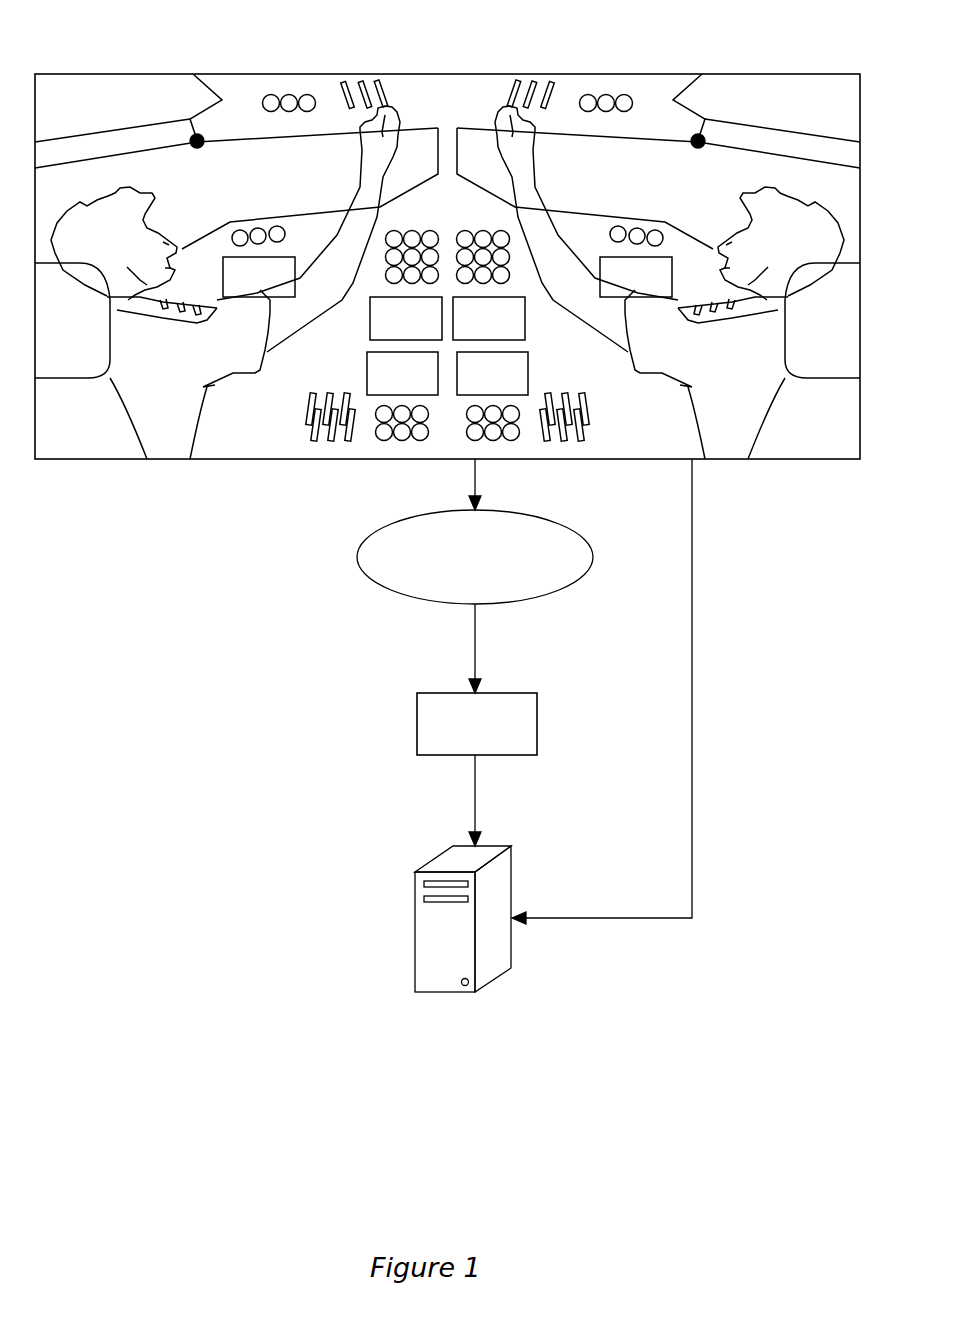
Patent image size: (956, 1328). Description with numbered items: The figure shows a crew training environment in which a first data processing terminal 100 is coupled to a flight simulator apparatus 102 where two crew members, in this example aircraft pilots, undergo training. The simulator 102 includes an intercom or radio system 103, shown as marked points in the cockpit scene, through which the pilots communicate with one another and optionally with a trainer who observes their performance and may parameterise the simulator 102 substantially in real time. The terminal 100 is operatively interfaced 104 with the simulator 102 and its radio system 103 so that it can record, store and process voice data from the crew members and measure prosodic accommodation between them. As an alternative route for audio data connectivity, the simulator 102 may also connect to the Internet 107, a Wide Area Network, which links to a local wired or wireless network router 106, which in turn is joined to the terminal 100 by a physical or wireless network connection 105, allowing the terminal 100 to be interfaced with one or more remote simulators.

The data processing terminal 100 is at (437, 933).
The flight simulator apparatus 102 is at (775, 459).
The intercom or radio system 103 is at (197, 141).
The operative interface 104 is at (692, 647).
The physical or wireless network connection 105 is at (475, 812).
The network router 106 is at (505, 745).
The Internet 107 is at (536, 596).